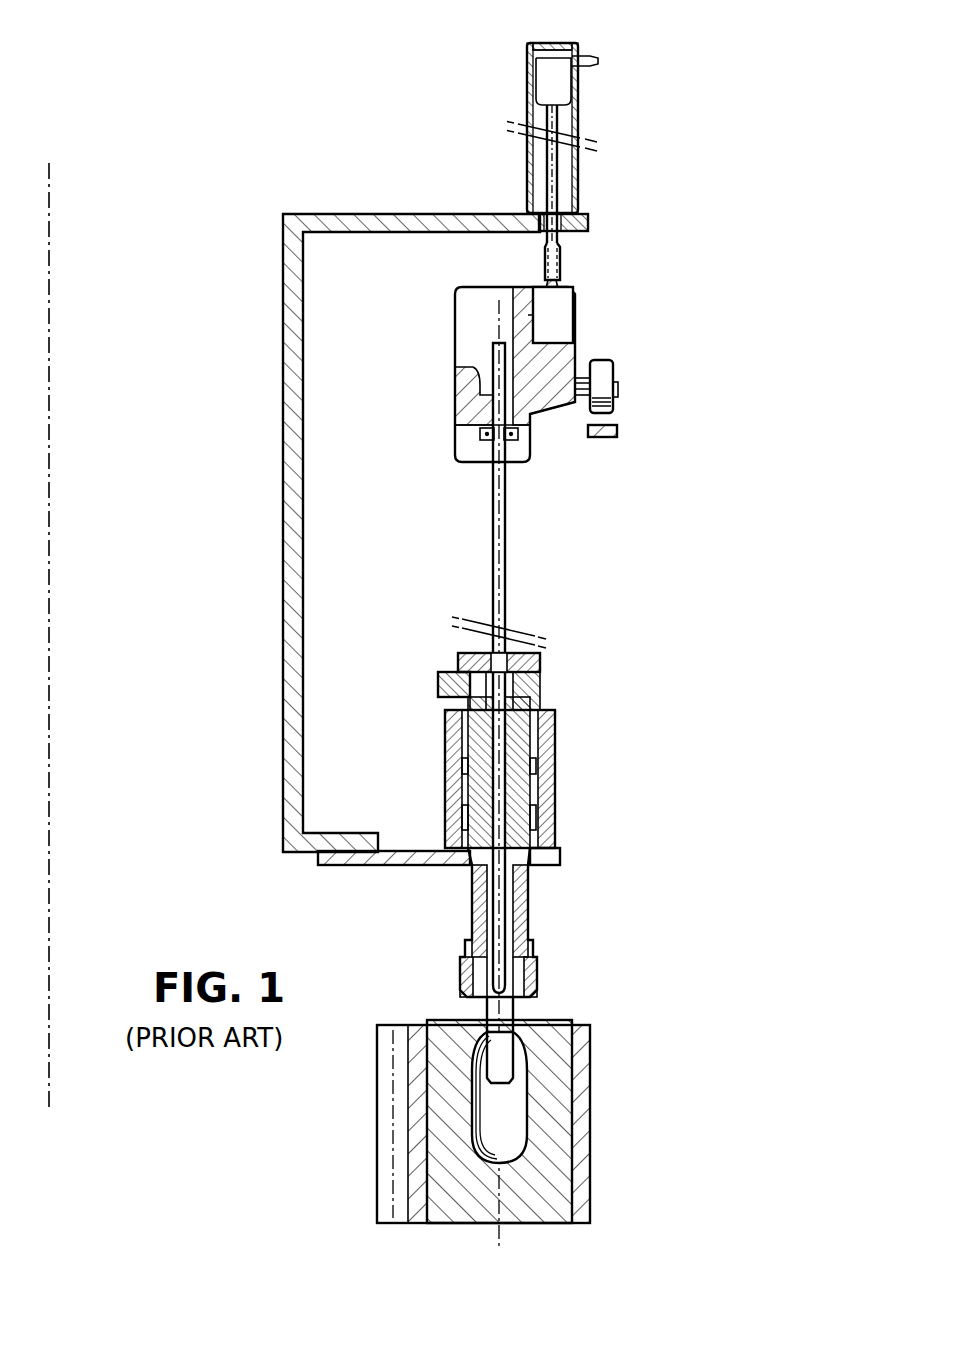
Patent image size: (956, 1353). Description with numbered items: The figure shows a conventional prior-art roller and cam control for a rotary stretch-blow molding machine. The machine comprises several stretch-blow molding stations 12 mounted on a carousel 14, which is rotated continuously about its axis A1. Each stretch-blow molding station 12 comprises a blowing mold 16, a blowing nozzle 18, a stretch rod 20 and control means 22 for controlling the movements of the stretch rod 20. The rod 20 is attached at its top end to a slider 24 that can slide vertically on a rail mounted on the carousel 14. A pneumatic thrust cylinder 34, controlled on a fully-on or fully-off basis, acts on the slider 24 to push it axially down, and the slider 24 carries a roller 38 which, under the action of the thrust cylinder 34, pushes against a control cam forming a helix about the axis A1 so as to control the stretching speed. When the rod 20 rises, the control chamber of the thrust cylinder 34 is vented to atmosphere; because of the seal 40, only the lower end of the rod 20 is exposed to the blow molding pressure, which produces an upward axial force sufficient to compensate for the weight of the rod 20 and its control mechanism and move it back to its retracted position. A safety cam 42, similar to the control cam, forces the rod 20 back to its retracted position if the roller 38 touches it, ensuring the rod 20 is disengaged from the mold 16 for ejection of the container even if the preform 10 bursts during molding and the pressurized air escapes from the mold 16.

The axis A1 is at (50, 313).
The preform 10 is at (512, 1053).
The stretch-blow molding station 12 is at (616, 832).
The carousel 14 is at (292, 473).
The blowing mold 16 is at (591, 1124).
The blowing nozzle 18 is at (528, 888).
The stretch rod 20 is at (495, 948).
The control means 22 is at (594, 272).
The slider 24 is at (548, 381).
The pneumatic thrust cylinder 34 is at (578, 121).
The roller 38 is at (606, 373).
The seal 40 is at (535, 681).
The safety cam 42 is at (617, 432).